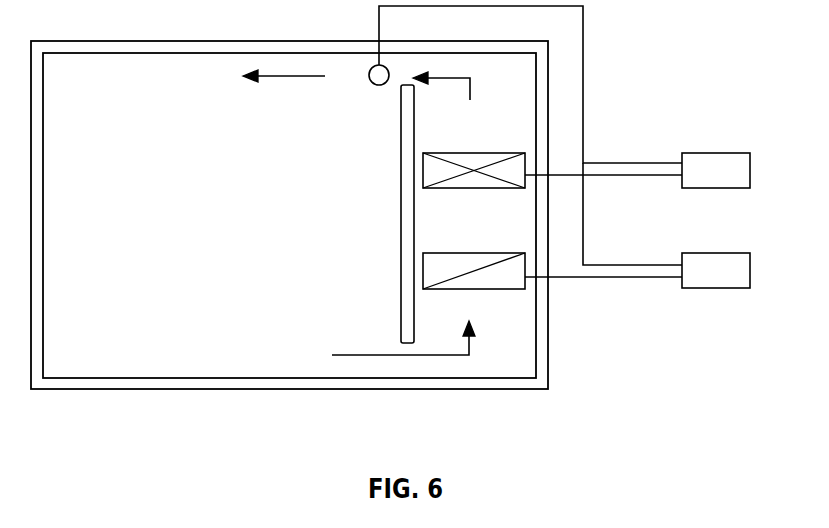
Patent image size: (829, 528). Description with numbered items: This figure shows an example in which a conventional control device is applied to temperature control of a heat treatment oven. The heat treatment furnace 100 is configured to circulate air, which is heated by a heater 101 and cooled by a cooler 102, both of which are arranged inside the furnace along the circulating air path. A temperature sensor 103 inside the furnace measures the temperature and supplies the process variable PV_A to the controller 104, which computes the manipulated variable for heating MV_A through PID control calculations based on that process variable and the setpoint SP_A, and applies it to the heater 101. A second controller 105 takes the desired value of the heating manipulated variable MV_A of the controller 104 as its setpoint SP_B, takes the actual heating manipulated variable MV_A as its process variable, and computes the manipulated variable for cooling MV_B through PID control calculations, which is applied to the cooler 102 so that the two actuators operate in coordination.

The heat treatment furnace 100 is at (137, 42).
The heater 101 is at (430, 153).
The cooler 102 is at (430, 253).
The temperature sensor 103 is at (376, 86).
The controller 104 is at (696, 153).
The controller 105 is at (696, 253).